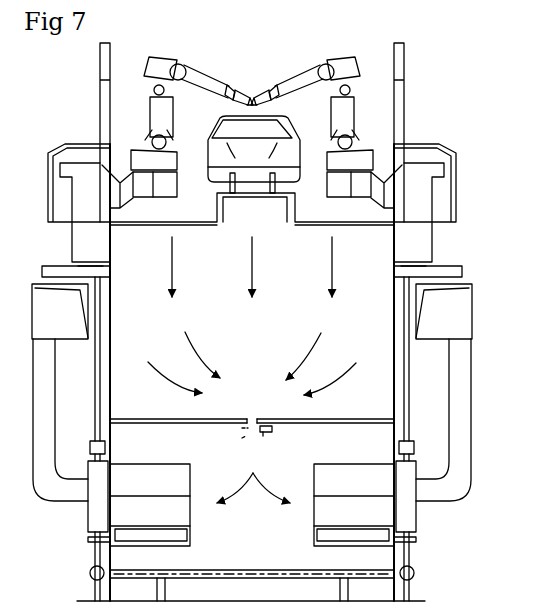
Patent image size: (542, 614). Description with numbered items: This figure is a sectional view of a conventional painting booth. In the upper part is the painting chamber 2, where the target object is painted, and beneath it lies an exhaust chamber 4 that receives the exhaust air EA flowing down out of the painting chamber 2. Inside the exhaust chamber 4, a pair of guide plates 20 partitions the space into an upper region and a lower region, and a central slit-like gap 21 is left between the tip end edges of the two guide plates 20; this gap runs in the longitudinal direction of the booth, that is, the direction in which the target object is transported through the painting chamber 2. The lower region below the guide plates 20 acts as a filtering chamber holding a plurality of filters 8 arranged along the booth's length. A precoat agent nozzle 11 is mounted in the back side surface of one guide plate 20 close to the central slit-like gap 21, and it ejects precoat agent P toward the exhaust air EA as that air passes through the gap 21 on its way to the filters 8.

The painting chamber 2 is at (265, 83).
The exhaust chamber 4 is at (261, 531).
The filter modules 8 is at (155, 462).
The precoat agent nozzle 11 is at (267, 433).
The guide plates 20 is at (150, 419).
The central slit-like gap 21 is at (250, 422).
The precoat agent P is at (253, 437).
The exhaust air EA is at (183, 340).